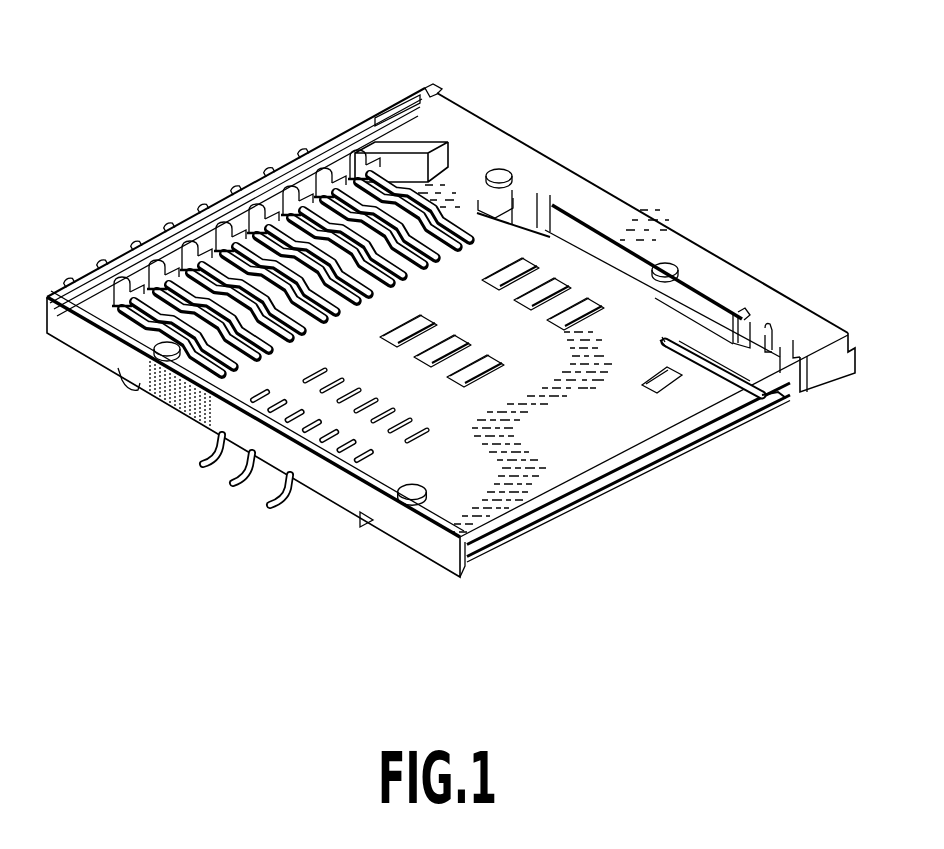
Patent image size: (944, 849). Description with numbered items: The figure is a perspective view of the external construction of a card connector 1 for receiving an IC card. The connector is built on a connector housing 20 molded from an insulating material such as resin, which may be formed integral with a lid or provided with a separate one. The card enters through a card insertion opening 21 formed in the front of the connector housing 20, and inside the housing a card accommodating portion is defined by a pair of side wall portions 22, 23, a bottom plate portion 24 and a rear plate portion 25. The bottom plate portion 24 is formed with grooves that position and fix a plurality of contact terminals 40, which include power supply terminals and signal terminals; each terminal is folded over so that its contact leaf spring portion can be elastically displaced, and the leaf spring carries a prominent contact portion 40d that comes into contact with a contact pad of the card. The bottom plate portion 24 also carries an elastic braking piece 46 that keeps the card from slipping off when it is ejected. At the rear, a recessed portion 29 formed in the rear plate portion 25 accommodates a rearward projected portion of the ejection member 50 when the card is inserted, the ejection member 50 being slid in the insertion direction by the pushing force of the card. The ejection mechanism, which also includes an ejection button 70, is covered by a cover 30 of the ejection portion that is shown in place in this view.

The card connector 1 is at (694, 226).
The connector housing 20 is at (517, 473).
The card insertion opening 21 is at (597, 440).
The side wall portion 22 is at (173, 410).
The side wall portion 23 is at (557, 205).
The bottom plate portion 24 is at (378, 518).
The rear plate portion 25 is at (200, 225).
The recessed portion 29 is at (378, 140).
The cover 30 is at (597, 207).
The contact terminals 40 is at (360, 133).
The prominent contact portion 40d is at (187, 267).
The elastic braking piece 46 is at (690, 358).
The ejection member 50 is at (432, 91).
The ejection button 70 is at (845, 367).